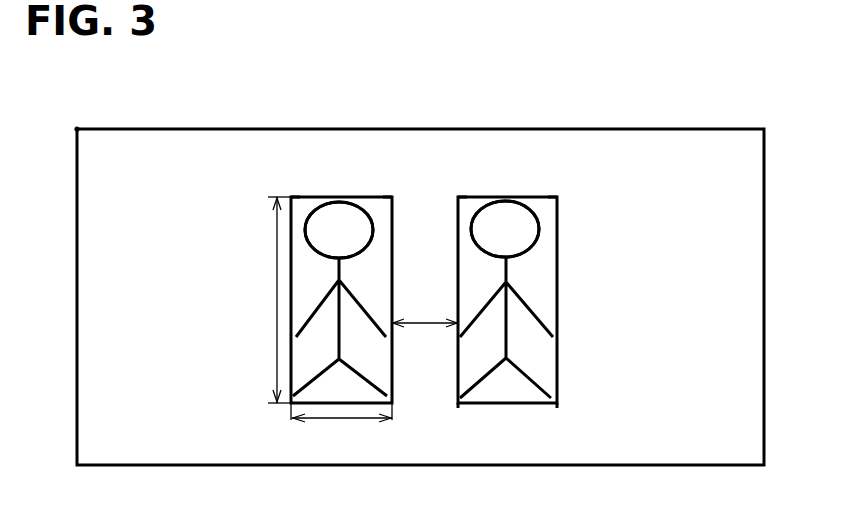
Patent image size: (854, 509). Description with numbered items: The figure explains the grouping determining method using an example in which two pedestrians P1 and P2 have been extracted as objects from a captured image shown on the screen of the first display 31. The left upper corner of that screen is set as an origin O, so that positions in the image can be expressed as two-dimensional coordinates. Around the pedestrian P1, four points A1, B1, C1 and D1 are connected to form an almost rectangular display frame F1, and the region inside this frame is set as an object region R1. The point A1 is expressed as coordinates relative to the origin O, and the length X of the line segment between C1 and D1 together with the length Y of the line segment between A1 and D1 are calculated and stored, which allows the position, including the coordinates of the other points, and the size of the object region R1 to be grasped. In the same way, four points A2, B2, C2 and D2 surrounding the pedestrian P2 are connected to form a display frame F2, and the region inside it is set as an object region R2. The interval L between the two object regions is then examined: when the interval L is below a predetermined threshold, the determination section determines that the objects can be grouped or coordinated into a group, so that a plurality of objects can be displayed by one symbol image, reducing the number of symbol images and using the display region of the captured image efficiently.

The first display 31 is at (425, 129).
The origin O is at (77, 129).
The object region R1 is at (262, 246).
The object region R2 is at (594, 243).
The pedestrian P1 is at (338, 213).
The pedestrian P2 is at (503, 212).
The display frame F1 is at (318, 197).
The display frame F2 is at (483, 197).
The point A1 is at (290, 197).
The point B1 is at (392, 197).
The point C1 is at (392, 405).
The point D1 is at (292, 405).
The point A2 is at (458, 197).
The point B2 is at (557, 197).
The point C2 is at (557, 404).
The point D2 is at (458, 404).
The length of line segment between C1 and D1 X is at (342, 432).
The length of line segment between A1 and D1 Y is at (272, 300).
The interval between the two object regions L is at (425, 313).